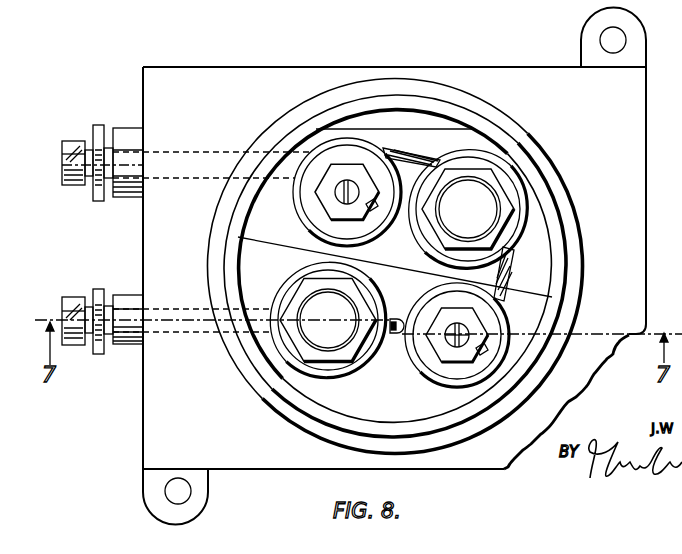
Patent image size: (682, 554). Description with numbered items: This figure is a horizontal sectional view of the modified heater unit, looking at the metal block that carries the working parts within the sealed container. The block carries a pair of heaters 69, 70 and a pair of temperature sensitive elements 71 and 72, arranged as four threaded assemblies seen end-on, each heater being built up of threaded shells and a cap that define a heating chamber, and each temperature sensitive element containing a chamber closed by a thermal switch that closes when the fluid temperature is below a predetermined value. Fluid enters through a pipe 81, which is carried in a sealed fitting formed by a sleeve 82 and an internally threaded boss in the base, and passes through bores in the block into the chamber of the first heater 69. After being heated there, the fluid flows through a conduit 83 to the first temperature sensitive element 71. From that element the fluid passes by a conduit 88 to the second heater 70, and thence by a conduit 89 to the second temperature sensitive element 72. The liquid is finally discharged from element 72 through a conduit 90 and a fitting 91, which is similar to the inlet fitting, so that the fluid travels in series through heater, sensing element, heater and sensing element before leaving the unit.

The heater 69 is at (335, 345).
The heater 70 is at (446, 226).
The temperature sensitive element 71 is at (437, 365).
The temperature sensitive element 72 is at (318, 207).
The pipe 81 is at (150, 332).
The sleeve 82 is at (100, 354).
The conduit 83 is at (395, 335).
The conduit 88 is at (513, 263).
The conduit 89 is at (410, 156).
The conduit 90 is at (150, 178).
The fitting 91 is at (100, 201).